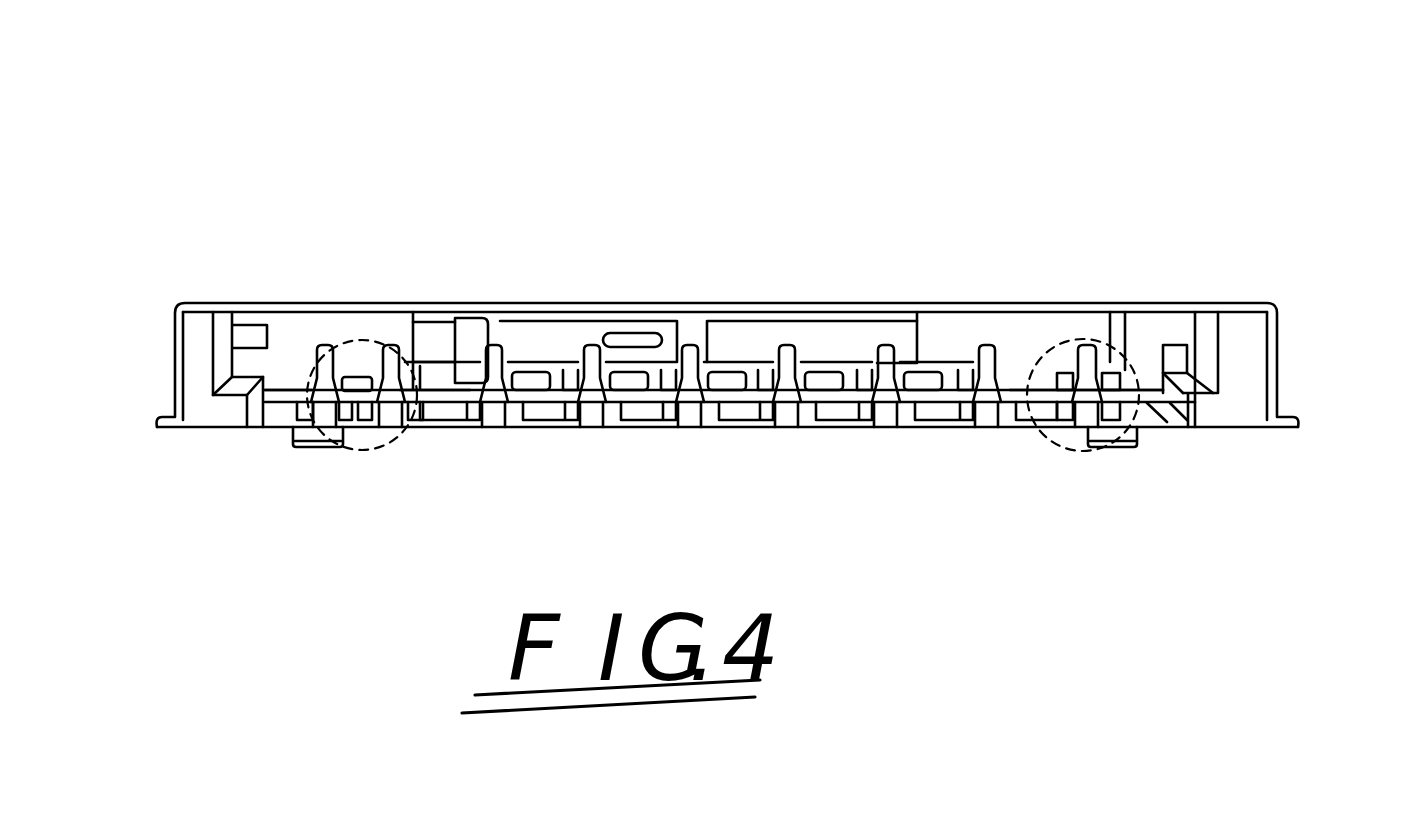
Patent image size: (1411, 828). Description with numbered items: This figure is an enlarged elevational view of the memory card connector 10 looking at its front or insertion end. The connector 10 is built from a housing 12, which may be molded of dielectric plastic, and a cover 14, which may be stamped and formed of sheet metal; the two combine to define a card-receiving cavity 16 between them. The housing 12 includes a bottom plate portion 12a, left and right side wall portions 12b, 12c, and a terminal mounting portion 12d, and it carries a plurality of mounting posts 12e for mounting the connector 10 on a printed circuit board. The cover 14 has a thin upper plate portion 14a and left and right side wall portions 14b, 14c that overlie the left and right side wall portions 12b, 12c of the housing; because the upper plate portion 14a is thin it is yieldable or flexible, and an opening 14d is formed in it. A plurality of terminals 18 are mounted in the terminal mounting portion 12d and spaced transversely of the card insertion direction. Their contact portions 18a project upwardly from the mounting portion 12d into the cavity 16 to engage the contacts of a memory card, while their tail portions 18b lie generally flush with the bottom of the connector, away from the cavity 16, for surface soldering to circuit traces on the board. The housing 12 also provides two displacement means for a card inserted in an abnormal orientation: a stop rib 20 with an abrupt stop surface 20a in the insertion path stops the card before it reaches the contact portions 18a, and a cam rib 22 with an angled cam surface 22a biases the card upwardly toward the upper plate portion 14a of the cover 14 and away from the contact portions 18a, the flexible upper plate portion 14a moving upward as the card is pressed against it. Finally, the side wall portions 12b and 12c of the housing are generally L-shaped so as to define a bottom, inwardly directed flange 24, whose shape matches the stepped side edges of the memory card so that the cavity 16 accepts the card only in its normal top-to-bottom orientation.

The memory card connector 10 is at (818, 172).
The housing 12 is at (1249, 301).
The bottom plate portion 12a is at (722, 428).
The left side wall portion 12b is at (194, 347).
The right side wall portion 12c is at (1247, 341).
The terminal mounting portion 12d is at (545, 428).
The mounting posts 12e is at (300, 447).
The cover 14 is at (1210, 294).
The upper plate portion 14a is at (718, 303).
The left side wall portion 14b is at (176, 360).
The right side wall portion 14c is at (1278, 357).
The opening 14d is at (1110, 366).
The card-receiving cavity 16 is at (946, 350).
The terminals 18 is at (470, 428).
The contact portions 18a is at (487, 342).
The tail portions 18b is at (490, 428).
The stop rib 20 is at (1060, 372).
The stop surface 20a is at (1125, 367).
The cam rib 22 is at (345, 378).
The angled cam surface 22a is at (370, 378).
The flange 24 is at (222, 417).